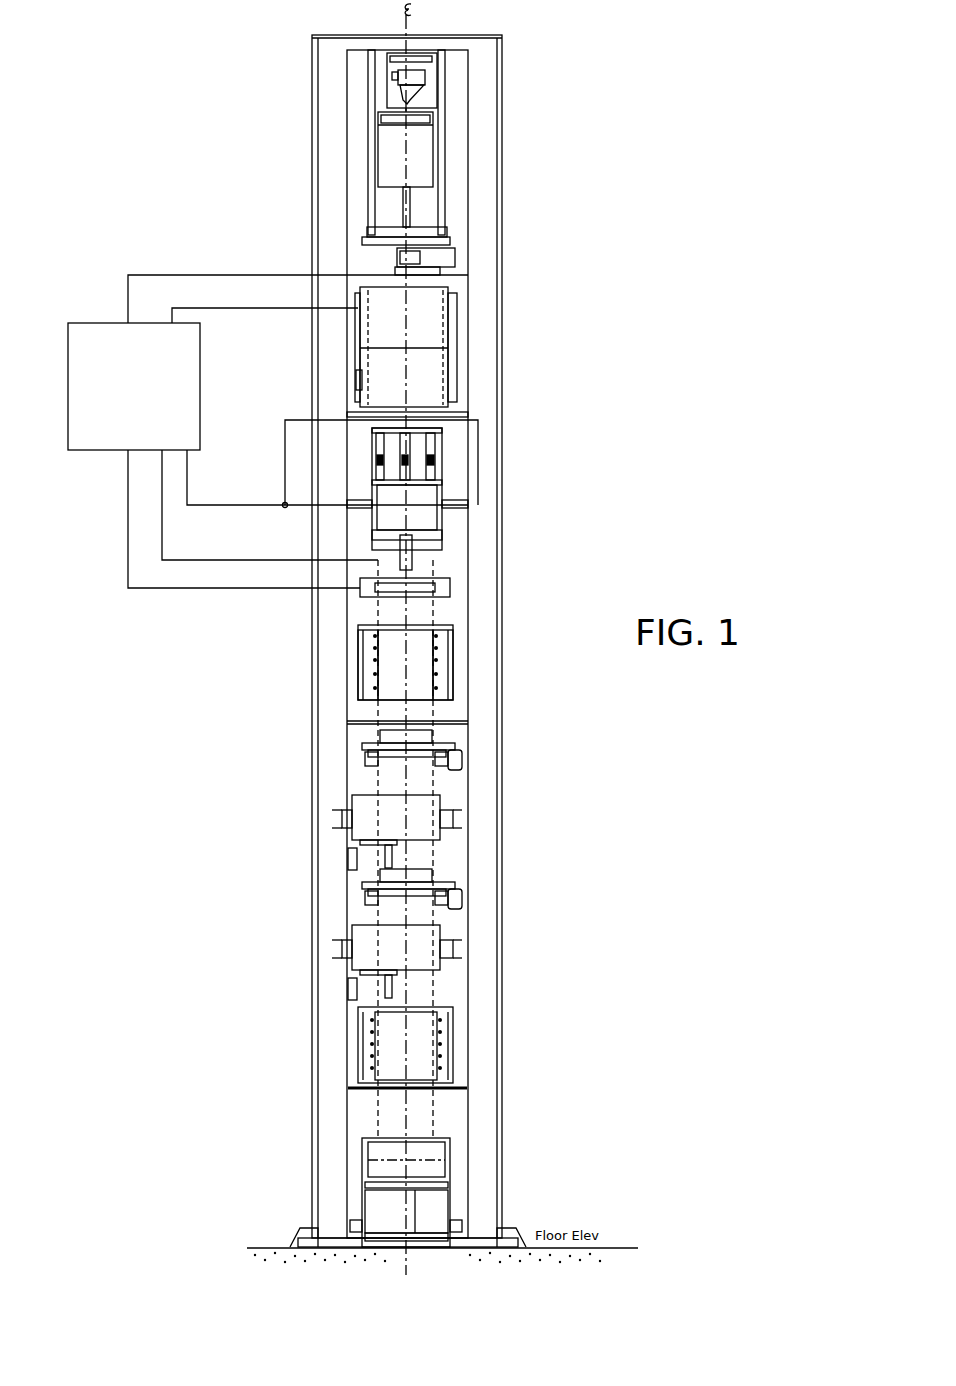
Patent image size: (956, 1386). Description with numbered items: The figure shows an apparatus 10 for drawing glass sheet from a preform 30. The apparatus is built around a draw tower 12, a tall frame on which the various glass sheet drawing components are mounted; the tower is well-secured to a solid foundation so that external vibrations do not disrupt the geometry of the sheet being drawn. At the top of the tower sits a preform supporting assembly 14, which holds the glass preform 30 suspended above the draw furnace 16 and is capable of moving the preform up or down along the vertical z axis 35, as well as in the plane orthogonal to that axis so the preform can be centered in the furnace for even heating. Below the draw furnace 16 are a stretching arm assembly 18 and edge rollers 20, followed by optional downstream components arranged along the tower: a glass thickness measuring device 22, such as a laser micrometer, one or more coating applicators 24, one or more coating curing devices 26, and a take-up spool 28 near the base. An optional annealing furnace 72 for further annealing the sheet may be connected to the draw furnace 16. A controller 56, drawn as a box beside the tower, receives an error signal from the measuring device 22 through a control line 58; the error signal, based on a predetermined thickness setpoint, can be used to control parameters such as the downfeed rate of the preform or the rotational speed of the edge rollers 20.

The apparatus 10 is at (535, 365).
The draw tower 12 is at (503, 230).
The preform supporting assembly 14 is at (452, 103).
The draw furnace 16 is at (443, 287).
The stretching arm assembly 18 is at (453, 470).
The edge rollers 20 is at (447, 682).
The glass thickness measuring device 22 is at (450, 578).
The coating applicator 24 is at (443, 740).
The coating curing device 26 is at (440, 803).
The take-up spool 28 is at (440, 1137).
The preform 30 is at (425, 190).
The z axis 35 is at (407, 22).
The controller 56 is at (68, 418).
The control line 58 is at (130, 545).
The annealing furnace 72 is at (358, 378).